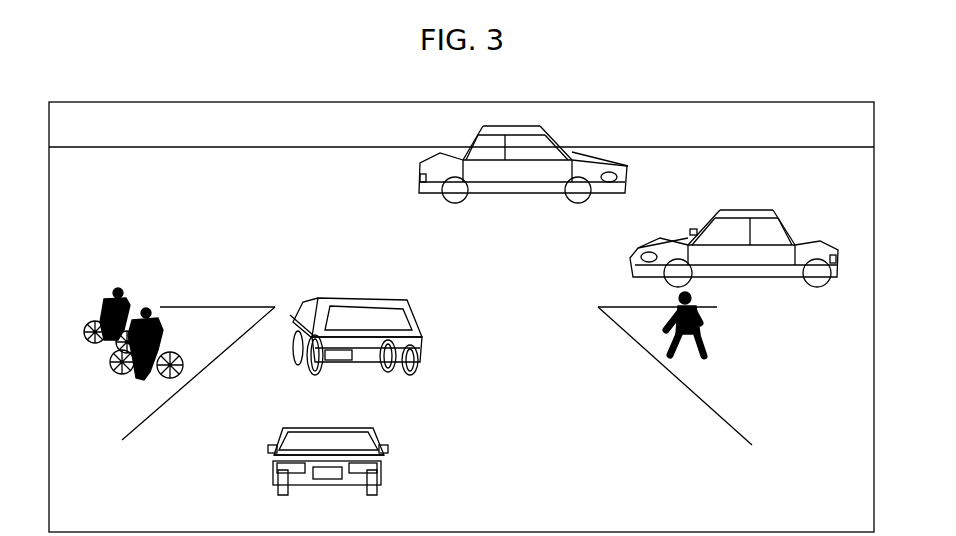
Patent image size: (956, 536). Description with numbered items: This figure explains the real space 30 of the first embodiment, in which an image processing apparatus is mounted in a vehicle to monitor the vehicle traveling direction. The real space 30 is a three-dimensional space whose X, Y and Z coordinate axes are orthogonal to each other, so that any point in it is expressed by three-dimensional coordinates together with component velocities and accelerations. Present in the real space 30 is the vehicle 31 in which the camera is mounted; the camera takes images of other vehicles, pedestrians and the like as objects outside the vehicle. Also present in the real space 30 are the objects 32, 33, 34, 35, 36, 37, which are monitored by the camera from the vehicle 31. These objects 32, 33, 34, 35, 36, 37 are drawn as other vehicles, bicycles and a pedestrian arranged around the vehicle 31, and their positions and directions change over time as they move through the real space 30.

The real space 30 is at (706, 102).
The vehicle 31 is at (323, 428).
The object 32 is at (366, 299).
The object 33 is at (466, 152).
The object 34 is at (744, 210).
The object 35 is at (145, 312).
The object 36 is at (108, 292).
The object 37 is at (703, 326).